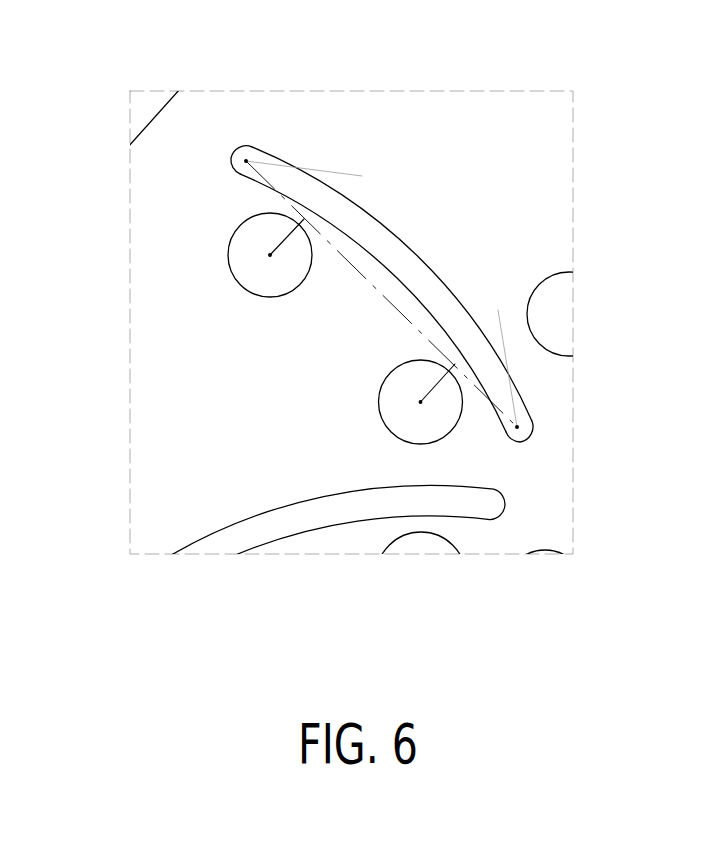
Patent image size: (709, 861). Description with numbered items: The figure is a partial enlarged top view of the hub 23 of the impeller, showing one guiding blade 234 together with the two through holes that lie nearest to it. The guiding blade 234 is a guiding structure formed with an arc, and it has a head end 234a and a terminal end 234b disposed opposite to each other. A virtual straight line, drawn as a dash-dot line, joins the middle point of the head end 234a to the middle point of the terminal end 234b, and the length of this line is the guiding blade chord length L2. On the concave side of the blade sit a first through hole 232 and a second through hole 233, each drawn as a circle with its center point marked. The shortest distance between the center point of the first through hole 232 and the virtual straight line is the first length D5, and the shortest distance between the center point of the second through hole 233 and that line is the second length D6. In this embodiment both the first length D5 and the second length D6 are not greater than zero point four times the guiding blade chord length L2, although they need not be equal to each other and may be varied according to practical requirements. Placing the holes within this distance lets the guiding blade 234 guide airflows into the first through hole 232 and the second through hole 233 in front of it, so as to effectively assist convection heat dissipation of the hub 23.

The hub 23 is at (502, 132).
The first through hole 232 is at (248, 258).
The second through hole 233 is at (405, 407).
The guiding blade 234 is at (385, 289).
The head end 234a is at (235, 135).
The terminal end 234b is at (529, 444).
The first length D5 is at (270, 255).
The second length D6 is at (420, 402).
The guiding blade chord length L2 is at (451, 226).